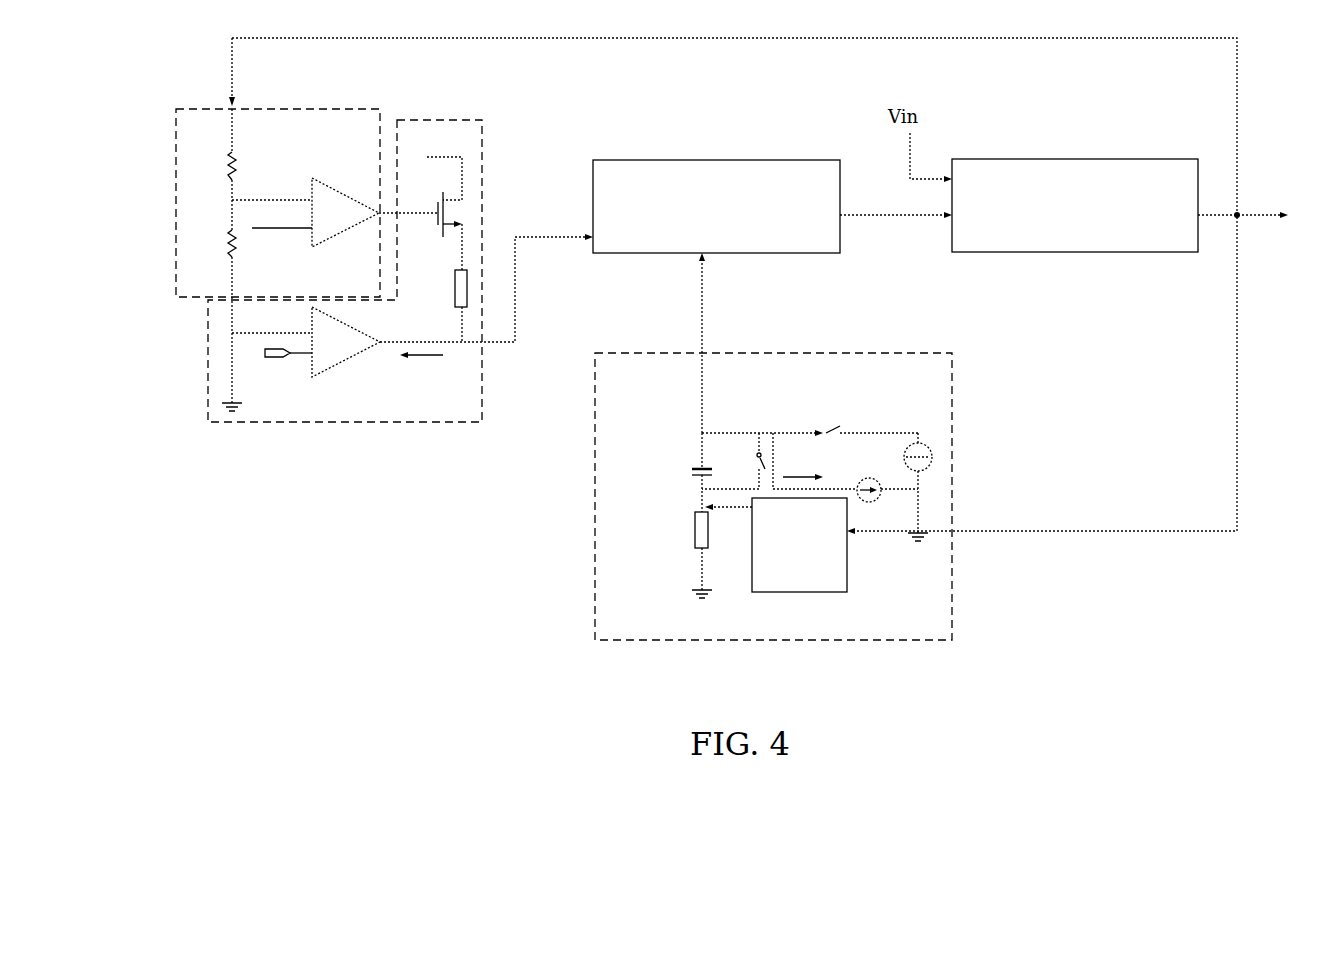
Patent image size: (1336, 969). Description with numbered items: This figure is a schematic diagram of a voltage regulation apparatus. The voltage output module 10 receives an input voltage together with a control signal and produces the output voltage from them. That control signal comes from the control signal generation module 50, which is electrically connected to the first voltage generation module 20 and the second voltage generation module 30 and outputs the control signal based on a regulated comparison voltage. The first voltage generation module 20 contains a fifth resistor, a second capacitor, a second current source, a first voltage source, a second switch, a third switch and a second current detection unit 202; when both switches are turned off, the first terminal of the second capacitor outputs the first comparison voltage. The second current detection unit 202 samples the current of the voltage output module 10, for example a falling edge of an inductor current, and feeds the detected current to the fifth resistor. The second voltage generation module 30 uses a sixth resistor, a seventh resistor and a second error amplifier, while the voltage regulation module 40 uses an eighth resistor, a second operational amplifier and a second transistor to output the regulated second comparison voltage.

The voltage output module 10 is at (1120, 157).
The first voltage generation module 20 is at (763, 353).
The second voltage generation module 30 is at (352, 113).
The voltage regulation module 40 is at (448, 118).
The control signal generation module 50 is at (763, 158).
The second current detection unit 202 is at (838, 566).